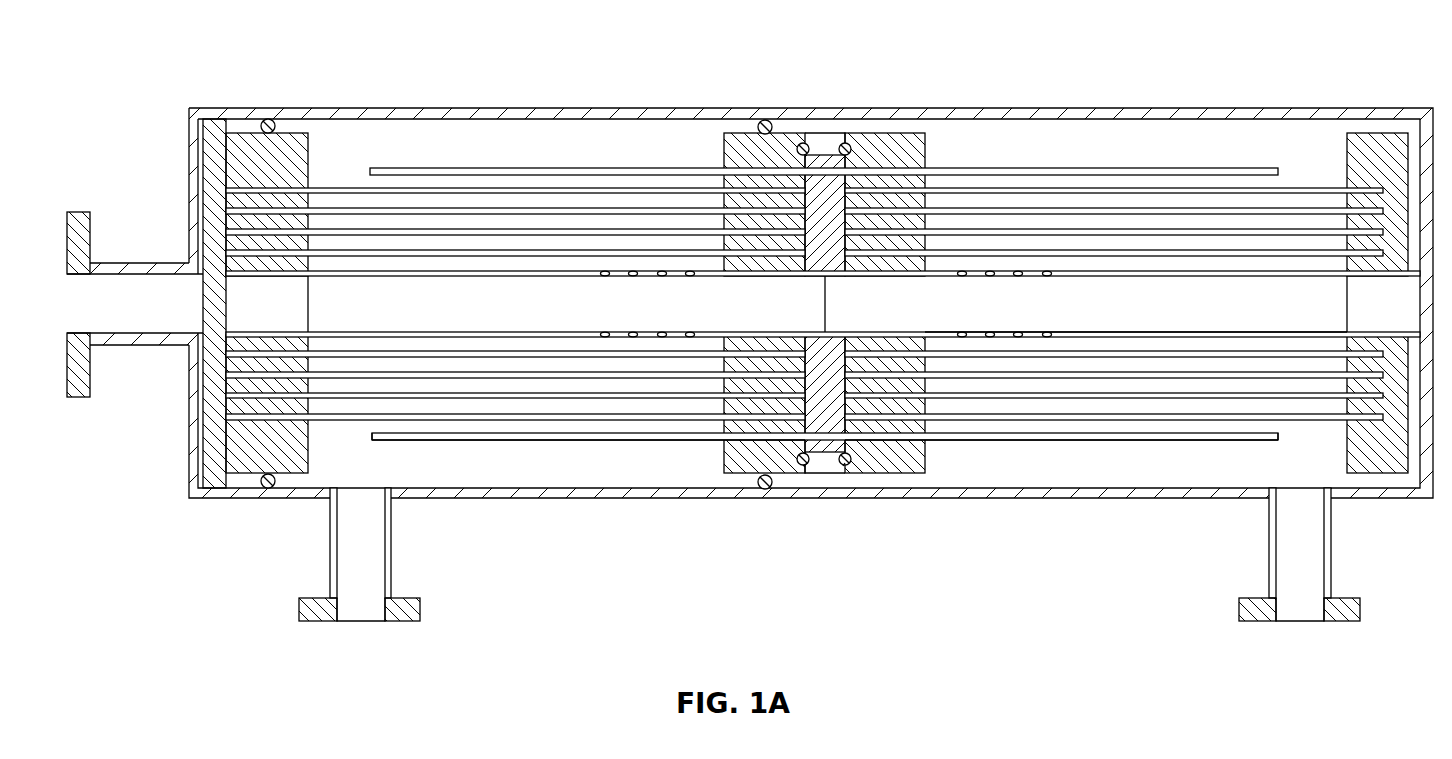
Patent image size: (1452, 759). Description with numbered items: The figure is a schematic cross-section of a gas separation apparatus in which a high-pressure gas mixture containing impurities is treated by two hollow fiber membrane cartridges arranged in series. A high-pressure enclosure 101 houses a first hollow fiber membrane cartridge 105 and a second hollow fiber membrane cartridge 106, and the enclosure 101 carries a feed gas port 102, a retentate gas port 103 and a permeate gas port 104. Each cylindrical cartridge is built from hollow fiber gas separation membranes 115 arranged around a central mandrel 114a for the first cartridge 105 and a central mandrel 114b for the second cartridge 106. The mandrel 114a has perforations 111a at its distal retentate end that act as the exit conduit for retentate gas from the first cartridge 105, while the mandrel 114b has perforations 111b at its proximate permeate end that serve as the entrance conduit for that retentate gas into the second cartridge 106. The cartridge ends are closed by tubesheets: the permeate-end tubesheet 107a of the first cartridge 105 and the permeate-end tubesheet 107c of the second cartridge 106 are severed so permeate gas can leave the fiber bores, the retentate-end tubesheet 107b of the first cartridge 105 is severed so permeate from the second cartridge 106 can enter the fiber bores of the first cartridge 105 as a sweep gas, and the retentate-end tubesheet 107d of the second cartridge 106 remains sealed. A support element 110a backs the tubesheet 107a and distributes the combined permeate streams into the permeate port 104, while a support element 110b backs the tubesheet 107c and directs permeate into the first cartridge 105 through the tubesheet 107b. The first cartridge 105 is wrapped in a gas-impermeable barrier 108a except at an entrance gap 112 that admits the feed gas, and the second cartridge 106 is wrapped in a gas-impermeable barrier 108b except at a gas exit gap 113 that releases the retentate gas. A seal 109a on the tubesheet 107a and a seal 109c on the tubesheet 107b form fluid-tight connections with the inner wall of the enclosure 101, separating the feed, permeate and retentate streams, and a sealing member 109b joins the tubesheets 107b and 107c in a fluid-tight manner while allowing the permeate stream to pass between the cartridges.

The high-pressure enclosure 101 is at (405, 112).
The feed gas port 102 is at (330, 565).
The retentate gas port 103 is at (1331, 572).
The permeate gas port 104 is at (148, 347).
The first hollow fiber membrane cartridge 105 is at (498, 380).
The second hollow fiber membrane cartridge 106 is at (1162, 387).
The permeate-end tubesheet of the first cartridge 107a is at (290, 145).
The retentate-end tubesheet of the first cartridge 107b is at (735, 145).
The permeate-end tubesheet of the second cartridge 107c is at (905, 148).
The retentate-end tubesheet of the second cartridge 107d is at (1367, 152).
The gas-impermeable barrier of the first cartridge 108a is at (630, 442).
The gas-impermeable barrier of the second cartridge 108b is at (1032, 443).
The seal 109a is at (267, 488).
The sealing member 109b is at (842, 465).
The seal 109c is at (765, 489).
The support element 110a is at (215, 180).
The support element 110b is at (818, 185).
The perforations 111a is at (620, 268).
The perforations 111b is at (975, 268).
The entrance gap 112 is at (365, 437).
The gas exit gap 113 is at (1290, 440).
The central mandrel 114a is at (398, 338).
The central mandrel 114b is at (1268, 337).
The hollow fiber gas separation membranes 115 is at (477, 172).